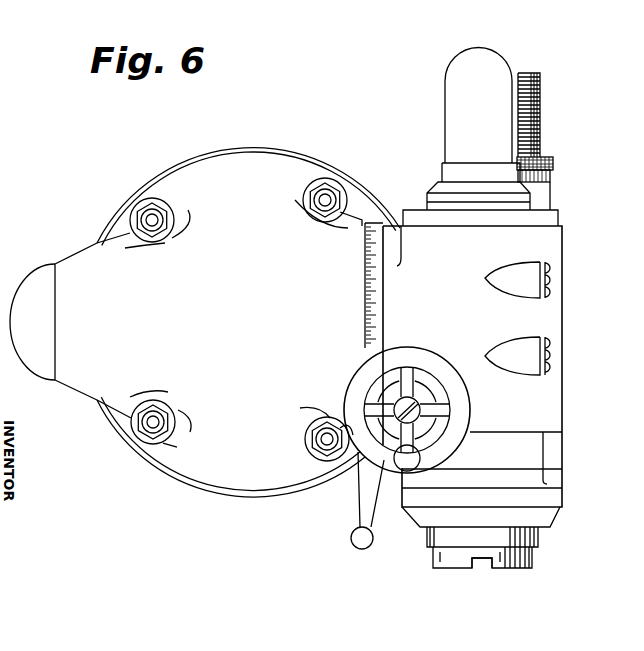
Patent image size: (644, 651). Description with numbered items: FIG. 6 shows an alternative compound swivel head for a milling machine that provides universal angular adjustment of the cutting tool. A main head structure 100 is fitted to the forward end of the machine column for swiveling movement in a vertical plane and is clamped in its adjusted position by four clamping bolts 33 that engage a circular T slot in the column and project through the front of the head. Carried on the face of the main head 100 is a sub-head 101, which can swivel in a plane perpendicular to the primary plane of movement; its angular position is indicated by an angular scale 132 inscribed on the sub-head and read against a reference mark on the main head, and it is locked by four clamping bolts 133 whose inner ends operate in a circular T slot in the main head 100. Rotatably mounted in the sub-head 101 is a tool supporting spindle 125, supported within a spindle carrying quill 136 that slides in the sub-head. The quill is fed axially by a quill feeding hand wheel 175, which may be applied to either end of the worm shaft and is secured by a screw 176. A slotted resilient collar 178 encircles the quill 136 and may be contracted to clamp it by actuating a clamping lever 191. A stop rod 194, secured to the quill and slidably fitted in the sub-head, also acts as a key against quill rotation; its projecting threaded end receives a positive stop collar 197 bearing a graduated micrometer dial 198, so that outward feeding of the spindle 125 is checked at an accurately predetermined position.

The main head structure 100 is at (318, 100).
The clamping bolts 33 is at (165, 212).
The sub-head 101 is at (602, 278).
The angular scale 132 is at (381, 312).
The clamping bolts 133 is at (549, 263).
The quill feeding hand wheel 175 is at (447, 345).
The screw 176 is at (418, 407).
The clamping lever 191 is at (360, 514).
The stop rod 194 is at (536, 76).
The positive stop collar 197 is at (556, 163).
The graduated micrometer dial 198 is at (553, 176).
The collar 178 is at (541, 523).
The spindle carrying quill 136 is at (433, 537).
The tool supporting spindle 125 is at (455, 565).